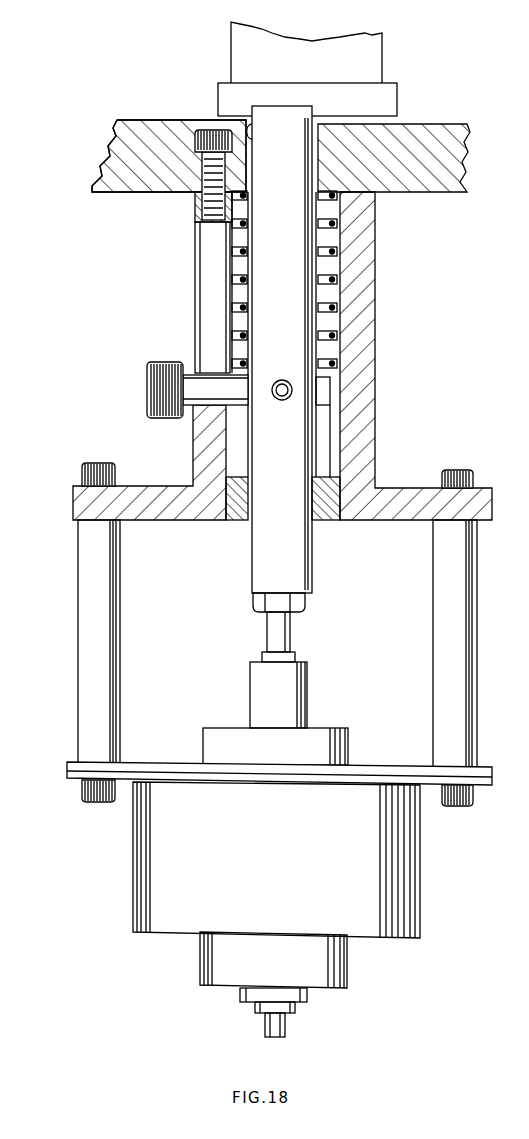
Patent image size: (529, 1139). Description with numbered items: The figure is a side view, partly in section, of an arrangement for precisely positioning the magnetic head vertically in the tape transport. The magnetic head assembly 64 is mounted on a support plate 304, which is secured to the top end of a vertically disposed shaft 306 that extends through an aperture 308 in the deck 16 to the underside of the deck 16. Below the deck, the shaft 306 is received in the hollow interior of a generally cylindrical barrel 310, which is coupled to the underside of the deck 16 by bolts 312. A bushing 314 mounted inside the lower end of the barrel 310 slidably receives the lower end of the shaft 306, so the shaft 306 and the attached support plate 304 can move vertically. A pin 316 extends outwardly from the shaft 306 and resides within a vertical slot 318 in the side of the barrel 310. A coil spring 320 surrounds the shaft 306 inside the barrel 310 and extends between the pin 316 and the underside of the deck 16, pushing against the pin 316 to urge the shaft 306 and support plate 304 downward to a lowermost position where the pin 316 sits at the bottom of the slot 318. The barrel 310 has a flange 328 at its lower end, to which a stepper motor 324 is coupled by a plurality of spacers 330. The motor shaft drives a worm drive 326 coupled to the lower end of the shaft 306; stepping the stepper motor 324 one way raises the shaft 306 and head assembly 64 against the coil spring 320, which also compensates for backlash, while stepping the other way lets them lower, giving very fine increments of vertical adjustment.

The deck 16 is at (440, 190).
The magnetic head assembly 64 is at (381, 54).
The support plate 304 is at (385, 98).
The shaft 306 is at (290, 322).
The aperture 308 is at (250, 126).
The barrel 310 is at (358, 398).
The bolts 312 is at (200, 200).
The bushing 314 is at (330, 492).
The pin 316 is at (212, 382).
The vertical slot 318 is at (210, 278).
The coil spring 320 is at (330, 243).
The stepper motor 324 is at (400, 873).
The worm drive 326 is at (318, 748).
The flange 328 is at (400, 508).
The spacers 330 is at (95, 578).